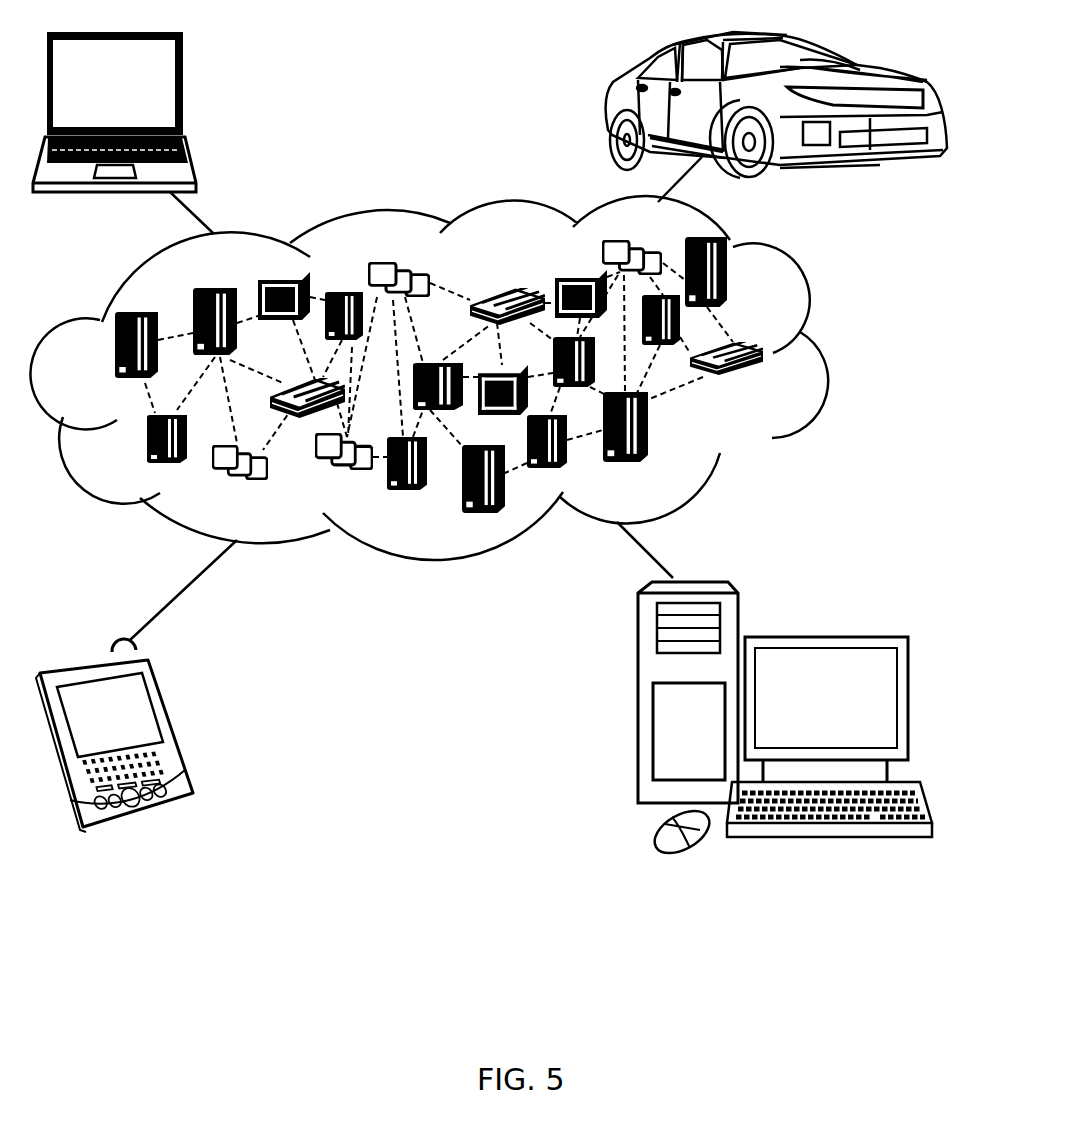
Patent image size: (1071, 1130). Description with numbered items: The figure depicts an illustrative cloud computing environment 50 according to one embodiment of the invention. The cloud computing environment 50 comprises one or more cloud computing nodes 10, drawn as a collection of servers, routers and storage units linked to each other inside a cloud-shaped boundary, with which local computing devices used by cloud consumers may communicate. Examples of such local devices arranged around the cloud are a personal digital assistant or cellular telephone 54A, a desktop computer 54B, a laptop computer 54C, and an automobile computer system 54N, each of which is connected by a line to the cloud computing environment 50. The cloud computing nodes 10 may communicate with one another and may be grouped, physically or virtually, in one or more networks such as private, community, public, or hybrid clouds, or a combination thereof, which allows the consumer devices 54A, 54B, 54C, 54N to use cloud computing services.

The personal digital assistant (PDA) or cellular telephone 54A is at (172, 727).
The desktop computer 54B is at (823, 636).
The laptop computer 54C is at (185, 91).
The automobile computer system 54N is at (612, 107).
The cloud computing environment 50 is at (822, 353).
The cloud computing node 10 is at (765, 385).